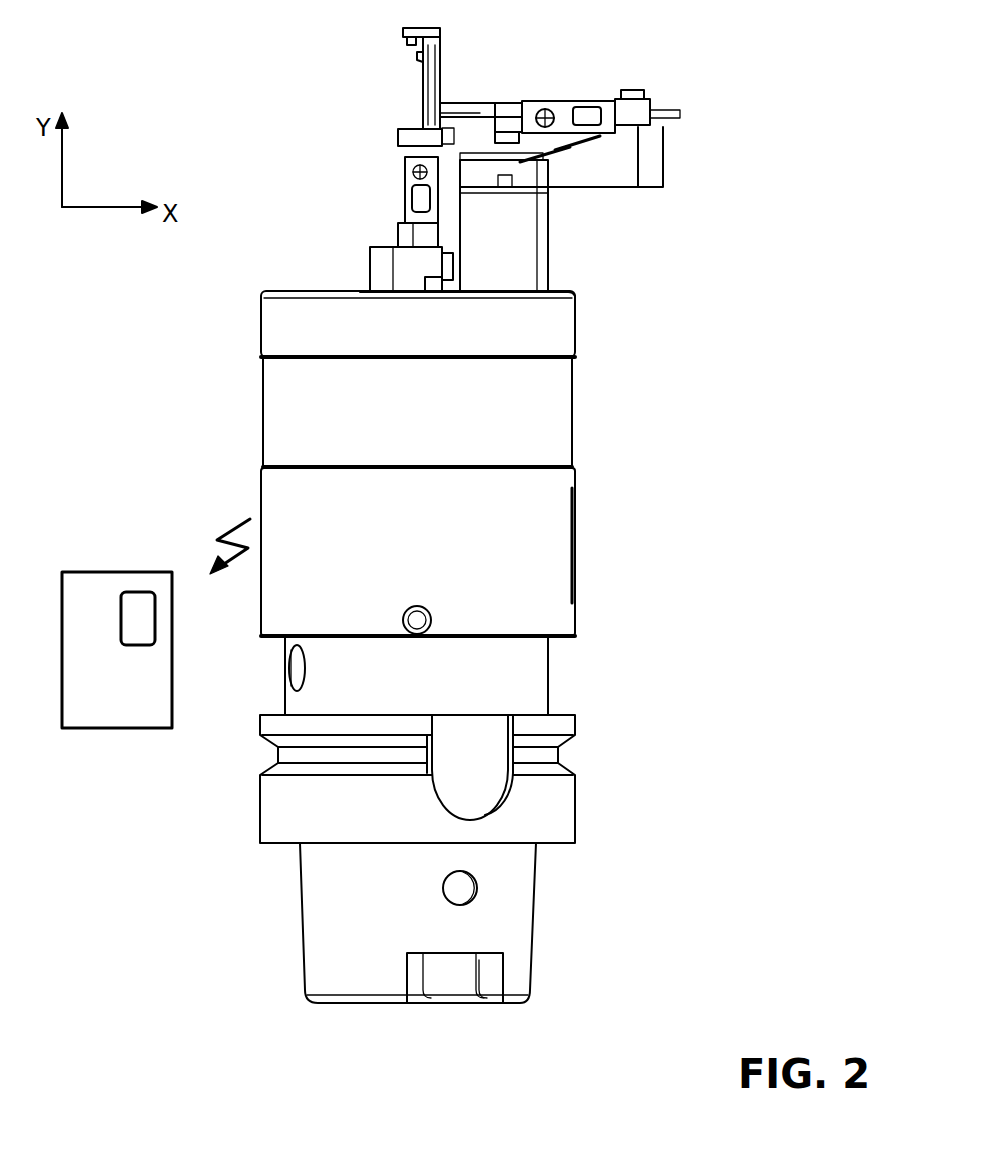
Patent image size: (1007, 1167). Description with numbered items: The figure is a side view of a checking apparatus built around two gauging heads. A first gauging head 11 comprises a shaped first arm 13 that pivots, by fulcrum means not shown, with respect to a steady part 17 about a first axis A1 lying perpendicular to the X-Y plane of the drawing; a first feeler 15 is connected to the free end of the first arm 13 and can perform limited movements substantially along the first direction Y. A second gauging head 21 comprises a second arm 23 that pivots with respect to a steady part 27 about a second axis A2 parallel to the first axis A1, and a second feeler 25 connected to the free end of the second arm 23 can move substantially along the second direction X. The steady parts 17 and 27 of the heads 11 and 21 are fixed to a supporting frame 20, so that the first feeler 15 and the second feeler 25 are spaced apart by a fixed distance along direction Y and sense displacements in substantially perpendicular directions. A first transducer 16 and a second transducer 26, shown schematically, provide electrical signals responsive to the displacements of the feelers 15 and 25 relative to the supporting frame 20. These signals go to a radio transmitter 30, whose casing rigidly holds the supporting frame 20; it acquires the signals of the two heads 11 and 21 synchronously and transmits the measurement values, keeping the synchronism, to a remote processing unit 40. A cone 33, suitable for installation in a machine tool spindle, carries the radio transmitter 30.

The first gauging head 11 is at (580, 99).
The first arm 13 is at (466, 108).
The first feeler 15 is at (410, 43).
The first transducer 16 is at (588, 119).
The steady part 17 is at (633, 96).
The supporting frame 20 is at (536, 328).
The second gauging head 21 is at (433, 159).
The second arm 23 is at (428, 78).
The second feeler 25 is at (418, 58).
The second transducer 26 is at (430, 198).
The steady part 27 is at (456, 198).
The radio transmitter 30 is at (523, 503).
The cone 33 is at (335, 953).
The remote processing unit 40 is at (90, 598).
The first axis A1 is at (548, 116).
The second axis A2 is at (427, 172).